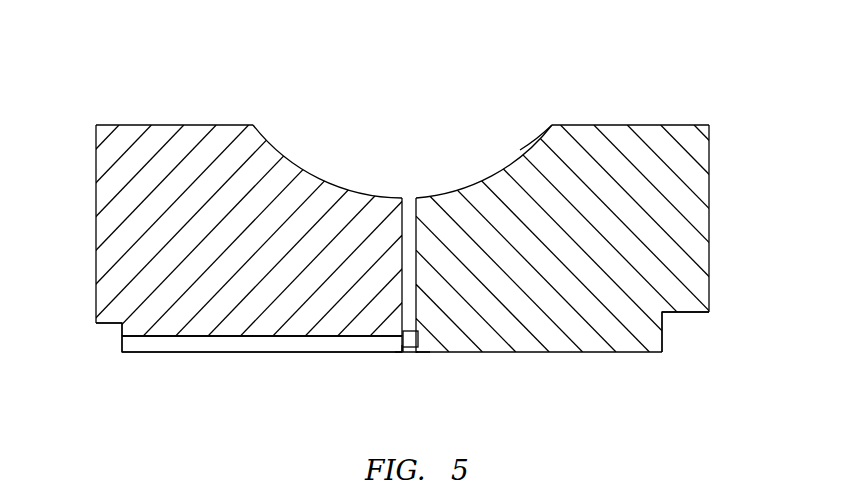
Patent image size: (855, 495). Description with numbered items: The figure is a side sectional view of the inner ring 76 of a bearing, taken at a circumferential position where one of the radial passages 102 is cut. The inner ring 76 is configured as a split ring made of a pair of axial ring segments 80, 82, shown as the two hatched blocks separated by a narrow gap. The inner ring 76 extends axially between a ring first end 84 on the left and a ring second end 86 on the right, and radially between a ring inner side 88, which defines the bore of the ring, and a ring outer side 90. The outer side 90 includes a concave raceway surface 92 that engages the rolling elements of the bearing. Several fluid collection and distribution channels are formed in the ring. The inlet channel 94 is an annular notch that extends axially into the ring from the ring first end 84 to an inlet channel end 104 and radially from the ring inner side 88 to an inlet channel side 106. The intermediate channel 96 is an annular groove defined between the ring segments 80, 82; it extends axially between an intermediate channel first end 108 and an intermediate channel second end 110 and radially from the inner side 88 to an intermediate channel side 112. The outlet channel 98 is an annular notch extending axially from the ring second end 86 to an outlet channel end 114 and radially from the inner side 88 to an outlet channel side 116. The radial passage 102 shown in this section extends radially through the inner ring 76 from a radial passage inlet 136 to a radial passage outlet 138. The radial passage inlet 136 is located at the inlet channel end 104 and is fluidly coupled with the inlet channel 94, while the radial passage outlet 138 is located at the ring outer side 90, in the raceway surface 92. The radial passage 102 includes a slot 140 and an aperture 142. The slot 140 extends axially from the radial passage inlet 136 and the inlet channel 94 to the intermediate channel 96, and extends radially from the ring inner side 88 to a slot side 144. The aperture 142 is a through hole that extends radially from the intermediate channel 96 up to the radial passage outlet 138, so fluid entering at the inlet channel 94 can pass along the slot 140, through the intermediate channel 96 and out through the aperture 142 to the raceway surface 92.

The inner ring 76 is at (98, 96).
The axial ring segment 80 is at (143, 123).
The axial ring segment 82 is at (636, 122).
The ring first end 84 is at (96, 205).
The ring second end 86 is at (709, 208).
The ring inner side 88 is at (553, 352).
The ring outer side 90 is at (567, 125).
The raceway surface 92 is at (492, 175).
The inlet channel 94 is at (100, 346).
The intermediate channel 96 is at (403, 330).
The outlet channel 98 is at (692, 347).
The radial passage 102 is at (305, 344).
The inlet channel end 104 is at (110, 334).
The inlet channel side 106 is at (103, 325).
The intermediate channel first end 108 is at (404, 353).
The intermediate channel second end 110 is at (413, 352).
The intermediate channel side 112 is at (423, 350).
The outlet channel end 114 is at (662, 352).
The outlet channel side 116 is at (709, 313).
The radial passage inlet 136 is at (122, 344).
The radial passage outlet 138 is at (405, 197).
The slot 140 is at (338, 352).
The aperture 142 is at (412, 226).
The slot side 144 is at (193, 338).